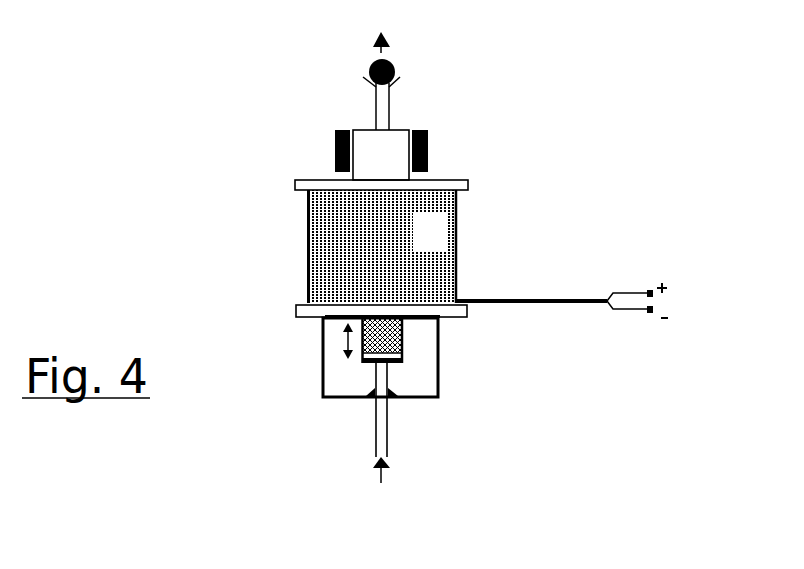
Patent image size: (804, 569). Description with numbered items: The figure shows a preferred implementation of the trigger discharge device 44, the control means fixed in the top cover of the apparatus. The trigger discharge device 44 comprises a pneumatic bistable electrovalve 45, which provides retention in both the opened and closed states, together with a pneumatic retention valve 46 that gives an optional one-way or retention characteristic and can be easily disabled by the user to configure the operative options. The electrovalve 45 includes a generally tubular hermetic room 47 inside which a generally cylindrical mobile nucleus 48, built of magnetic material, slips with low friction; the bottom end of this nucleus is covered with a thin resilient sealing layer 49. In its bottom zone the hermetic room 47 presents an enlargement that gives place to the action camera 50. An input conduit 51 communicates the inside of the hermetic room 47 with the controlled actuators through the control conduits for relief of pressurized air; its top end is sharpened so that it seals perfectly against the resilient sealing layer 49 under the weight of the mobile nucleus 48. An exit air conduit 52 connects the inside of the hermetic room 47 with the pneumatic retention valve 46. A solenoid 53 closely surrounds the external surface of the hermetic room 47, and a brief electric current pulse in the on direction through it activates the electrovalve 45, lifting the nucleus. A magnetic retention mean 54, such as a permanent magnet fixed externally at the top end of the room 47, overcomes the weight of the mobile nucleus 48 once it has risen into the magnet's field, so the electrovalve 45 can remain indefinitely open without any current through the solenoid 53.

The trigger discharge device 44 is at (414, 242).
The pneumatic bistable electrovalve 45 is at (349, 229).
The pneumatic retention valve 46 is at (404, 60).
The hermetic room 47 is at (381, 155).
The mobile nucleus 48 is at (403, 348).
The resilient sealing layer 49 is at (393, 362).
The action camera 50 is at (361, 357).
The input conduit 51 is at (394, 423).
The exit air conduit 52 is at (375, 108).
The solenoid 53 is at (382, 246).
The magnetic retention mean 54 is at (399, 141).